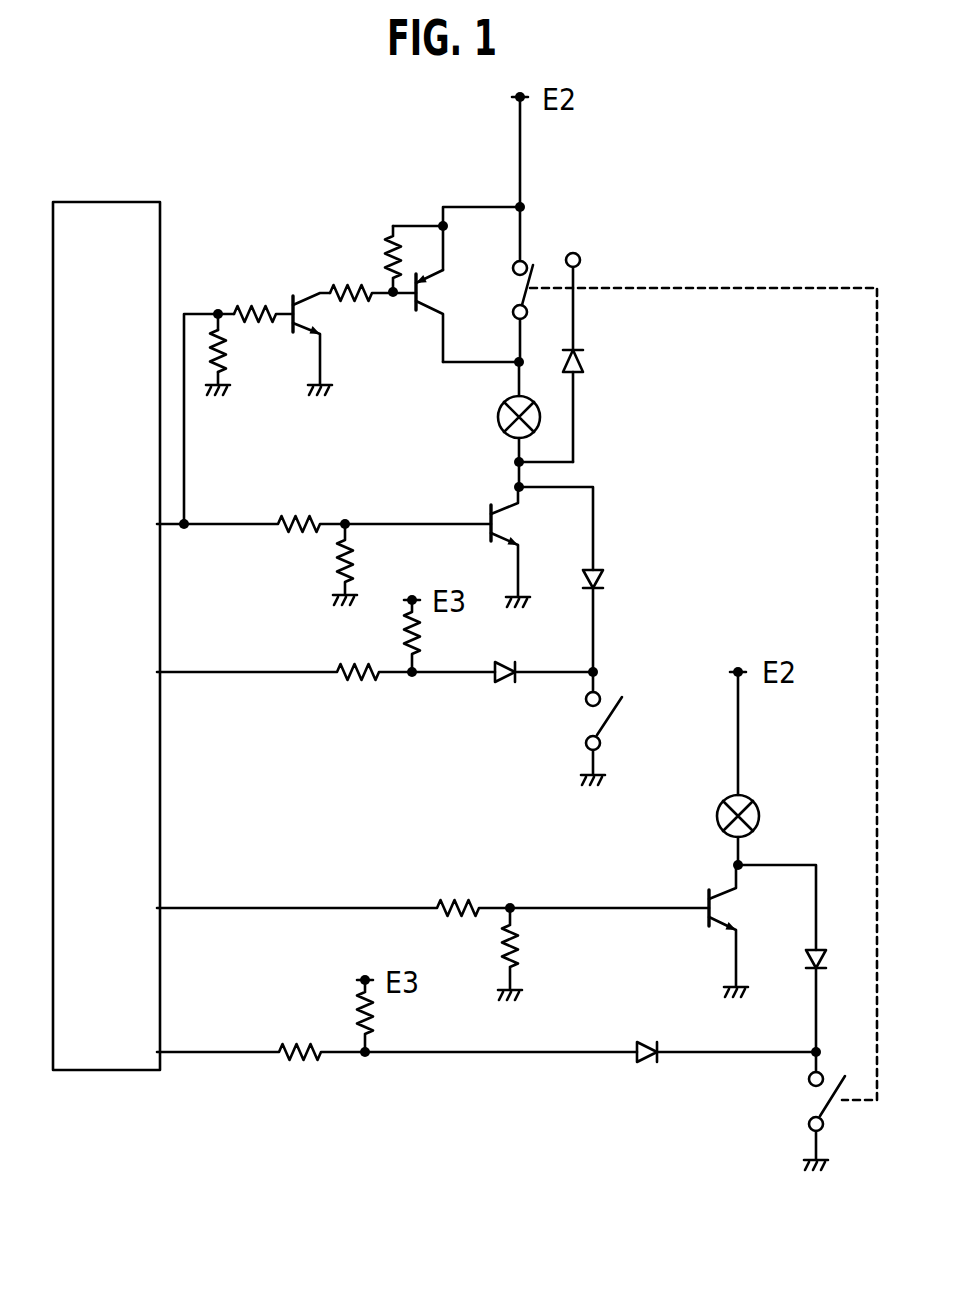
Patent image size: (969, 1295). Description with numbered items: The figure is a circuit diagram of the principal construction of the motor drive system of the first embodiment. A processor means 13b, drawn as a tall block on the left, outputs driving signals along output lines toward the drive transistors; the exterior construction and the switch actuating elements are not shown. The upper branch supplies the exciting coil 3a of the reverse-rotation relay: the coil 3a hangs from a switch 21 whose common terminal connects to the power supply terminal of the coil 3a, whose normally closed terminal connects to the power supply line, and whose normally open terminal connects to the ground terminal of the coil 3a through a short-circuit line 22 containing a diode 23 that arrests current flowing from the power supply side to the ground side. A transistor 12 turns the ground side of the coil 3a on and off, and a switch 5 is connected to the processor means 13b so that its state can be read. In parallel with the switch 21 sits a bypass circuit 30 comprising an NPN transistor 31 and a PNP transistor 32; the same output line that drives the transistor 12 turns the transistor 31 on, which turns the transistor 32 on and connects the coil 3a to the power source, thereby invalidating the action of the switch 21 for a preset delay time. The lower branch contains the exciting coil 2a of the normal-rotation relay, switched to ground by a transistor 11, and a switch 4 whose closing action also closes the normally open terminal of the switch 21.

The processor means 13b is at (95, 202).
The bypass circuit 30 is at (283, 200).
The NPN transistor 31 is at (306, 292).
The PNP transistor 32 is at (428, 275).
The switch 21 is at (534, 272).
The short-circuit line 22 is at (580, 328).
The diode 23 is at (582, 374).
The exciting coil 3a is at (499, 414).
The transistor 12 is at (505, 505).
The switch 5 is at (605, 723).
The exciting coil 2a is at (724, 798).
The transistor 11 is at (720, 890).
The switch 4 is at (830, 1105).